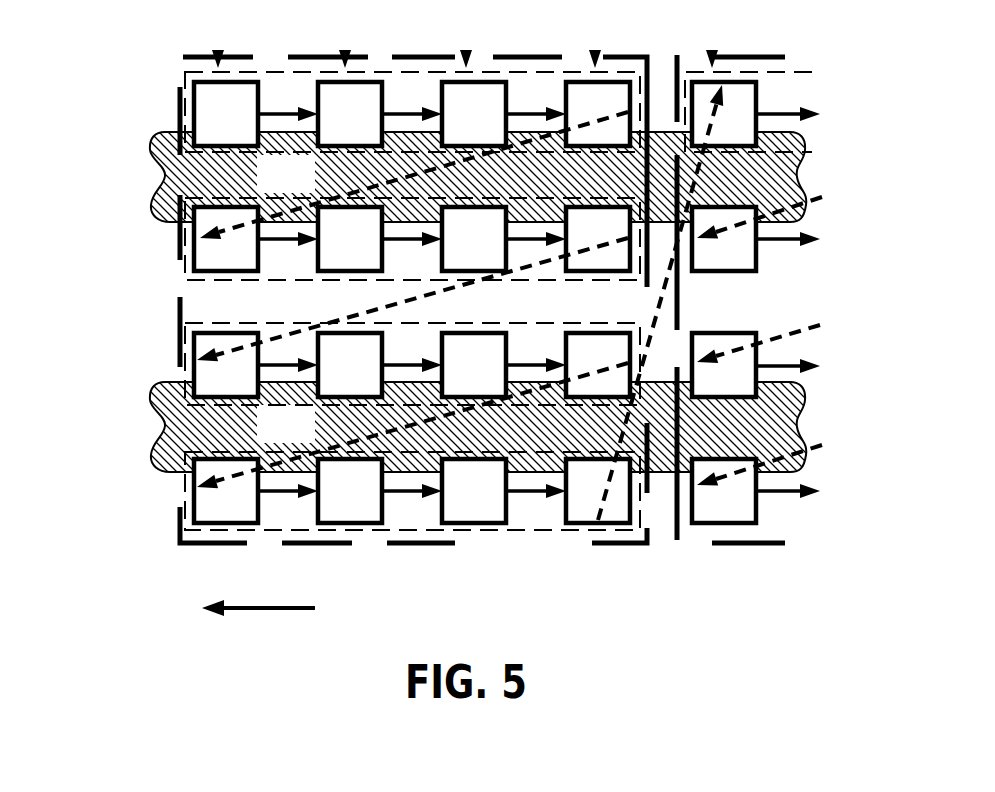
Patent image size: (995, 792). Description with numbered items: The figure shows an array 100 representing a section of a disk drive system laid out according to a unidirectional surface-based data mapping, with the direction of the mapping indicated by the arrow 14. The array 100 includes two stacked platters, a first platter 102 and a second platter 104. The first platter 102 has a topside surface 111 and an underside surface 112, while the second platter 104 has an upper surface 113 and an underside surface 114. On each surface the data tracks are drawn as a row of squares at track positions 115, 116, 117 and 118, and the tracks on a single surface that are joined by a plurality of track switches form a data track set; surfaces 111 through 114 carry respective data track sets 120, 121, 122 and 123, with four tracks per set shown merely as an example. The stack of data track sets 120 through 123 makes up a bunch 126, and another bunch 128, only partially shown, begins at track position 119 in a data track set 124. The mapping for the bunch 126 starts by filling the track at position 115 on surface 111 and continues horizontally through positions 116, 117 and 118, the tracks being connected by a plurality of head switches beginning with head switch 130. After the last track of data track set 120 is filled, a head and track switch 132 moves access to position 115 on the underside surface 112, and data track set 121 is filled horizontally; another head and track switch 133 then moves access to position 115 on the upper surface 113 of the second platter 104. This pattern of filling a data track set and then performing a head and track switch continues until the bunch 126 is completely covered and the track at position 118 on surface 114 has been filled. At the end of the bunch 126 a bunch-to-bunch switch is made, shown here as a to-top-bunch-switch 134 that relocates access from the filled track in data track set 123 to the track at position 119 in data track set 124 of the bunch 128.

The array 100 is at (475, 316).
The direction of media travel 14 is at (274, 610).
The first platter 102 is at (267, 186).
The second platter 104 is at (267, 436).
The topside surface 111 is at (177, 132).
The underside surface 112 is at (174, 224).
The upper surface 113 is at (181, 382).
The underside surface 114 is at (174, 474).
The data track 115 is at (220, 50).
The data track 116 is at (346, 50).
The data track 117 is at (467, 50).
The data track 118 is at (596, 50).
The data track 119 is at (714, 50).
The data track set 120 is at (412, 85).
The data track set 121 is at (396, 272).
The data track set 122 is at (396, 351).
The data track set 123 is at (397, 526).
The data track set 124 is at (770, 101).
The bunch 126 is at (452, 545).
The bunch 128 is at (732, 545).
The head switch 130 is at (274, 110).
The head and track switch 132 is at (375, 186).
The head and track switch 133 is at (410, 308).
The to-top-bunch-switch 134 is at (656, 323).